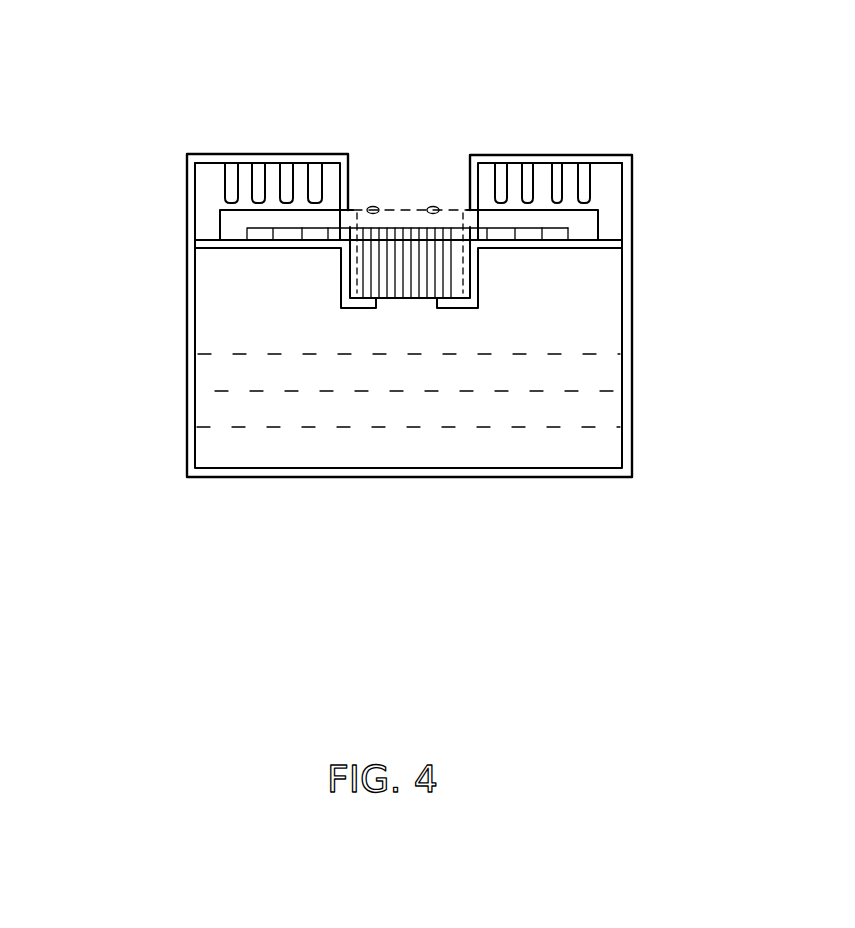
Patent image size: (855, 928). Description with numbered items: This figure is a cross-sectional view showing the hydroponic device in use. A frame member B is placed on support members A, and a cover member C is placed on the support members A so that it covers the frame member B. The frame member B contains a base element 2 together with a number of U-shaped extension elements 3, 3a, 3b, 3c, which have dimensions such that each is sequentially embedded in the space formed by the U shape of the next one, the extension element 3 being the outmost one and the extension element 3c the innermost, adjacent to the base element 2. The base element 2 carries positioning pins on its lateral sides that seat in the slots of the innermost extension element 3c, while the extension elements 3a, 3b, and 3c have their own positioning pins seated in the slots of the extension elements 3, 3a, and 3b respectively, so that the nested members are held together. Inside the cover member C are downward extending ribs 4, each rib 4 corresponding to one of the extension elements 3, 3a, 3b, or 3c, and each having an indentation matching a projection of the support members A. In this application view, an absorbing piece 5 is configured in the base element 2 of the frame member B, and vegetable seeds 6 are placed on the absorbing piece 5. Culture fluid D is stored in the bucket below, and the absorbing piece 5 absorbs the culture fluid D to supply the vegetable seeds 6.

The support member A is at (175, 273).
The frame member B is at (333, 198).
The cover member C is at (569, 140).
The culture fluid D is at (418, 427).
The base element 2 is at (365, 274).
The extension element 3 is at (592, 221).
The extension element 3a is at (498, 240).
The extension element 3b is at (530, 240).
The extension element 3c is at (557, 238).
The rib 4 is at (229, 184).
The absorbing piece 5 is at (402, 210).
The vegetable seeds 6 is at (435, 207).